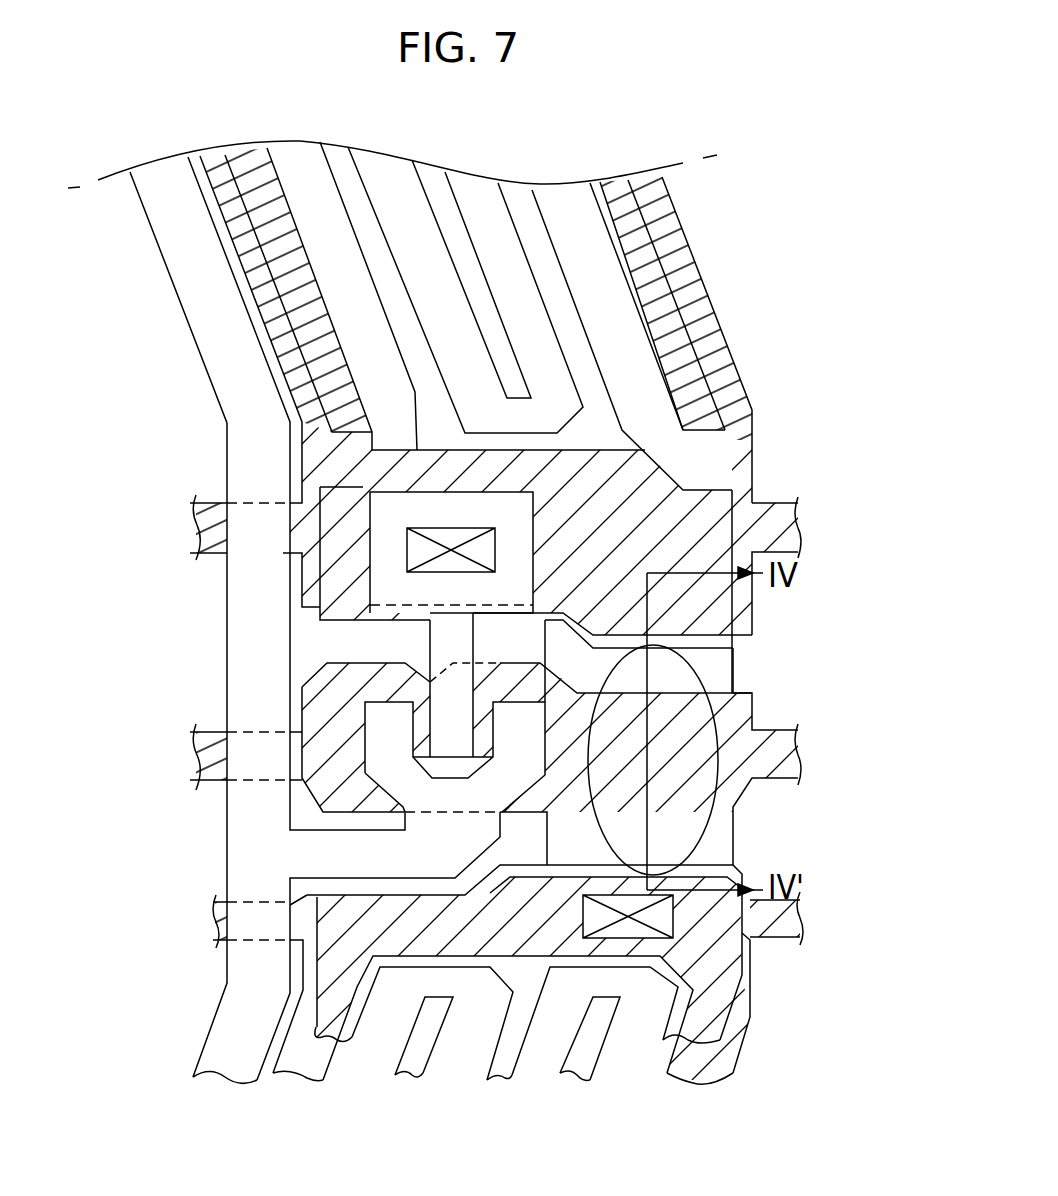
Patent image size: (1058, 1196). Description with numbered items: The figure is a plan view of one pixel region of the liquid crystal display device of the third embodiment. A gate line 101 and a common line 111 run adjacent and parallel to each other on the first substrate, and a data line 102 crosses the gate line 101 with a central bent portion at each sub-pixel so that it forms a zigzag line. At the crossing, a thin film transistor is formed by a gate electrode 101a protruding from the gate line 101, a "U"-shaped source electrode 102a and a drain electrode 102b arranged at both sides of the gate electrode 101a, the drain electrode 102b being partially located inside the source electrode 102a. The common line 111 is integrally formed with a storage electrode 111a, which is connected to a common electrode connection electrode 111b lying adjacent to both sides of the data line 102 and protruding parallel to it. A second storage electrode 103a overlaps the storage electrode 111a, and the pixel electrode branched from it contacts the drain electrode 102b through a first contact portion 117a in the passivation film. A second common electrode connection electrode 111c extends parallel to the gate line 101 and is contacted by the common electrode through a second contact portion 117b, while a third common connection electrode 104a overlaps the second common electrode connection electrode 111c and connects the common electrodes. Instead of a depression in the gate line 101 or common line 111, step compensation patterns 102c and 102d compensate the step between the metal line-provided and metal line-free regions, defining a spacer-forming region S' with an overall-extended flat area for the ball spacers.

The gate line 101 is at (209, 782).
The gate electrode 101a is at (497, 700).
The data line 102 is at (203, 371).
The source electrode 102a is at (500, 812).
The drain electrode 102b is at (378, 520).
The step compensation pattern 102c is at (733, 832).
The step compensation pattern 102d is at (733, 673).
The second storage electrode 103a is at (733, 582).
The third common connection electrode 104a is at (753, 935).
The common line 111 is at (212, 553).
The storage electrode 111a is at (752, 625).
The common electrode connection electrode 111b is at (730, 350).
The second common electrode connection electrode 111c is at (525, 957).
The first contact portion 117a is at (407, 558).
The second contact portion 117b is at (673, 917).
The spacer-forming region S' is at (812, 794).